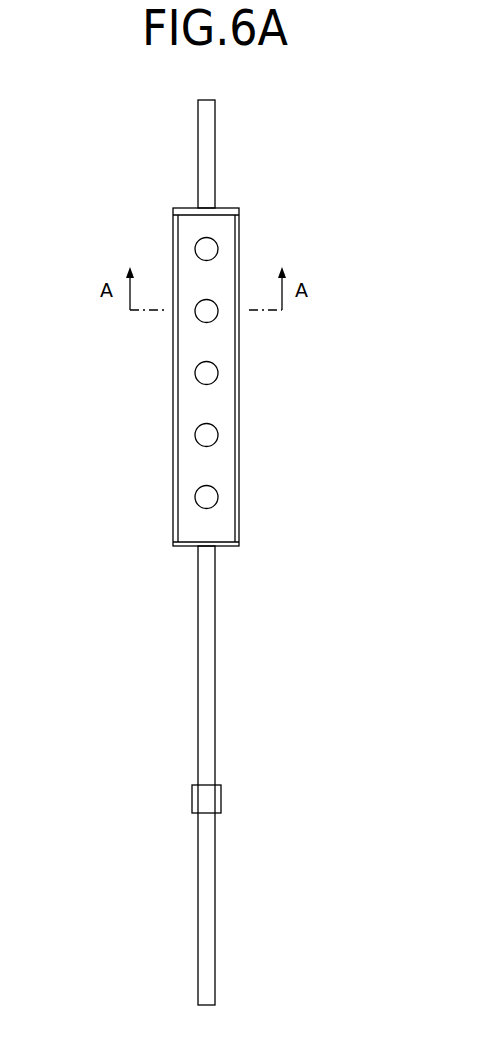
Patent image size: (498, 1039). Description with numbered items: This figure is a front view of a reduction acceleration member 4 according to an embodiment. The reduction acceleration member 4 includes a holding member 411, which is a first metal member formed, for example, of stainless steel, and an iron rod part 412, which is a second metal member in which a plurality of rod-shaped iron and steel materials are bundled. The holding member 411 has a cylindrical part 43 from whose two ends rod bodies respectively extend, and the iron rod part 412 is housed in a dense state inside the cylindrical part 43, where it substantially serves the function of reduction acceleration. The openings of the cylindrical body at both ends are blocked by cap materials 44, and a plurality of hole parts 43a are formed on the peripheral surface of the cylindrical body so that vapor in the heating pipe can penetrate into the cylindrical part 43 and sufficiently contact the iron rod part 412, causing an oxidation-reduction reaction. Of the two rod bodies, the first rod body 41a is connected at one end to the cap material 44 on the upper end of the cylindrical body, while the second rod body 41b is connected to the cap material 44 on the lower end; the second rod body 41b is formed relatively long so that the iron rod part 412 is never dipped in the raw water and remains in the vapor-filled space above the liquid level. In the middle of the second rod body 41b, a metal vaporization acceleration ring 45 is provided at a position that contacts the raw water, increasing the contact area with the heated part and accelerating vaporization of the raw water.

The reduction acceleration member 4 is at (267, 129).
The first rod body 41a is at (215, 165).
The second rod body 41b is at (215, 713).
The holding member 411 is at (250, 338).
The iron rod part 412 is at (204, 318).
The cylindrical part 43 is at (240, 401).
The hole parts 43a is at (207, 249).
The cap materials 44 is at (178, 208).
The vaporization acceleration ring 45 is at (221, 798).